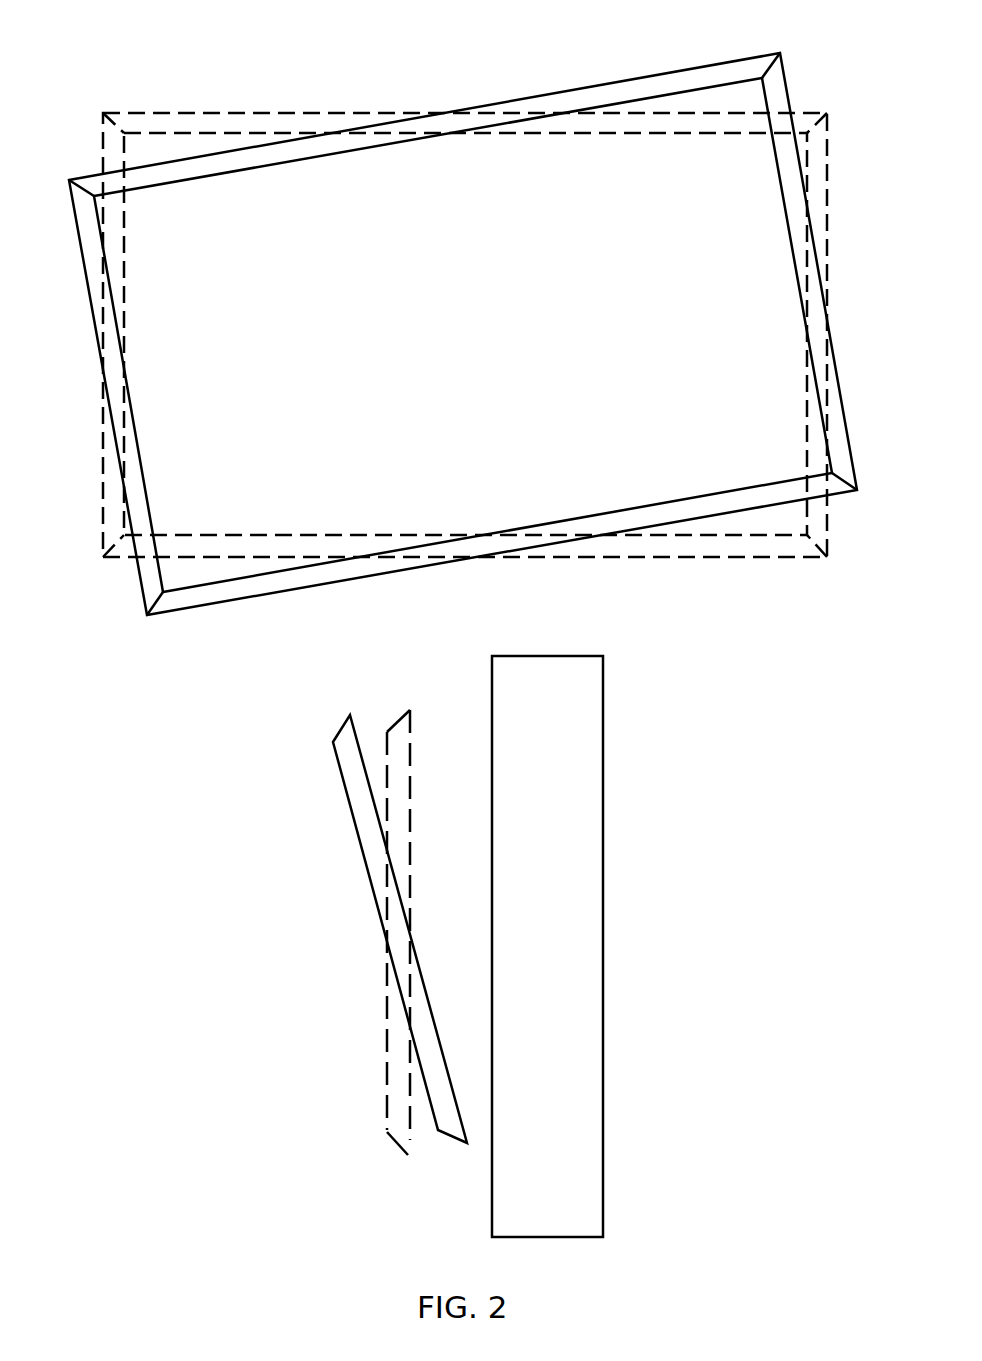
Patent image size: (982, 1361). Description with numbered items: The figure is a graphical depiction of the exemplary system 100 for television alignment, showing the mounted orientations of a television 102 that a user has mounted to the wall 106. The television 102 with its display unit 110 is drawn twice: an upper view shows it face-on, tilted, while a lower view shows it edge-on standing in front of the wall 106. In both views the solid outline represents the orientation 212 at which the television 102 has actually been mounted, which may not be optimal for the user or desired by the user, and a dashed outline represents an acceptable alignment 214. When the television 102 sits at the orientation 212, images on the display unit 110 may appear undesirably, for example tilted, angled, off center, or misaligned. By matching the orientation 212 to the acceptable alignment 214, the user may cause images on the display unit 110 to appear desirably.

The system for television alignment 100 is at (107, 80).
The television 102 is at (500, 102).
The wall 106 is at (605, 836).
The display unit 110 is at (230, 222).
The orientation 212 is at (328, 732).
The acceptable alignment 214 is at (849, 113).